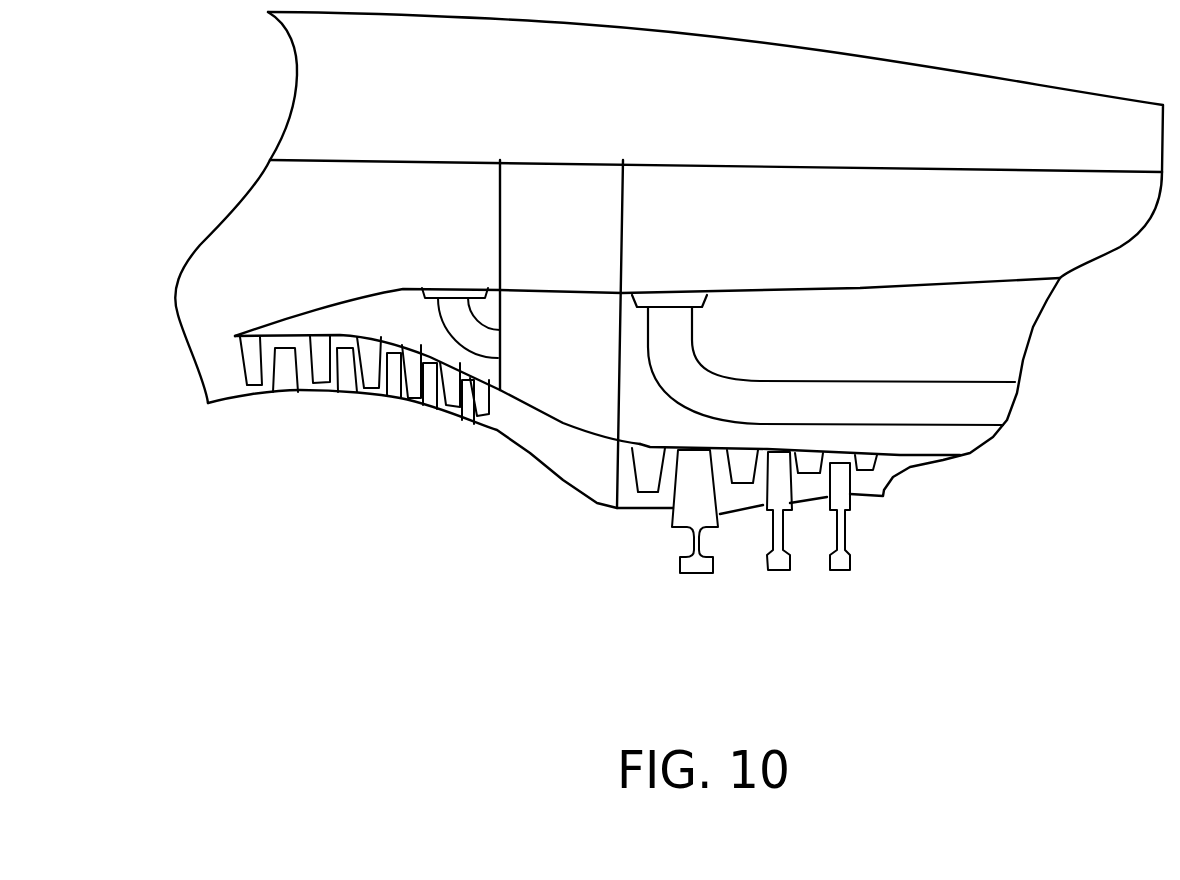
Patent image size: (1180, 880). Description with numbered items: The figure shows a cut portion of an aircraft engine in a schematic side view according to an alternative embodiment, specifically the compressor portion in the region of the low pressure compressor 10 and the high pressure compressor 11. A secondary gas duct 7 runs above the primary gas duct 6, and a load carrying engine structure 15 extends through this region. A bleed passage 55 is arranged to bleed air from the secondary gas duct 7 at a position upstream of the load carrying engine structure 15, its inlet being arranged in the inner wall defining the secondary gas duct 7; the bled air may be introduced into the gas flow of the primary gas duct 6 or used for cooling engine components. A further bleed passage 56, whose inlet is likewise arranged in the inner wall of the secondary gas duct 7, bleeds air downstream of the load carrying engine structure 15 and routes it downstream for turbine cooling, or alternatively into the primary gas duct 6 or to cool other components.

The primary gas duct 6 is at (577, 477).
The secondary gas duct 7 is at (913, 273).
The low pressure compressor 10 is at (330, 408).
The high pressure compressor 11 is at (782, 594).
The load carrying engine structure 15 is at (618, 397).
The bleed passage 55 is at (465, 340).
The further bleed passage 56 is at (677, 333).